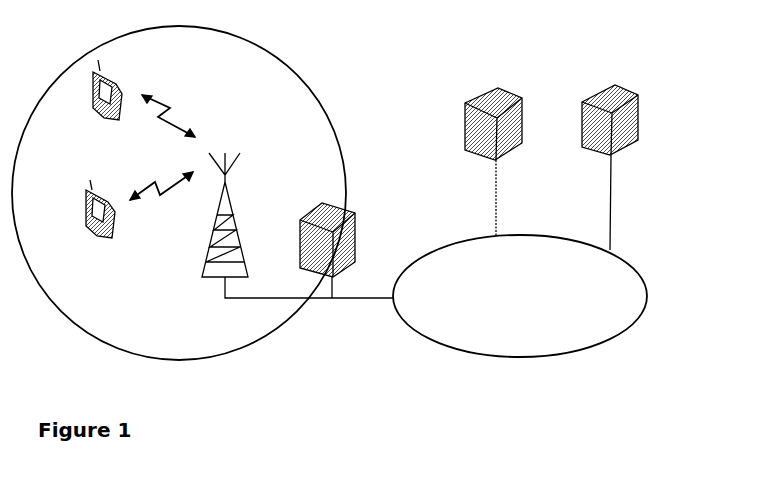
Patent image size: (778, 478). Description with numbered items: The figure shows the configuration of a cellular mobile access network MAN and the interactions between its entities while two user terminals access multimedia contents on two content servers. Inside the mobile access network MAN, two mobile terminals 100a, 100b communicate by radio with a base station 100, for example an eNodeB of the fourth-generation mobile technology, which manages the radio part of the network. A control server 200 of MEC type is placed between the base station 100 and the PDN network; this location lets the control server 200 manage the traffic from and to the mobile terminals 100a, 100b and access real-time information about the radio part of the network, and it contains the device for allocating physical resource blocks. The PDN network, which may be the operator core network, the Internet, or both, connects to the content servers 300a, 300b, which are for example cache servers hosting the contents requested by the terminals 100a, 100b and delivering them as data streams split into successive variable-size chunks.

The base station 100 is at (205, 278).
The mobile terminal 100a is at (98, 118).
The mobile terminal 100b is at (104, 240).
The control server 200 is at (326, 203).
The content server 300a is at (492, 86).
The content server 300b is at (605, 84).
The mobile access network MAN is at (293, 72).
The PDN network PDN is at (520, 296).